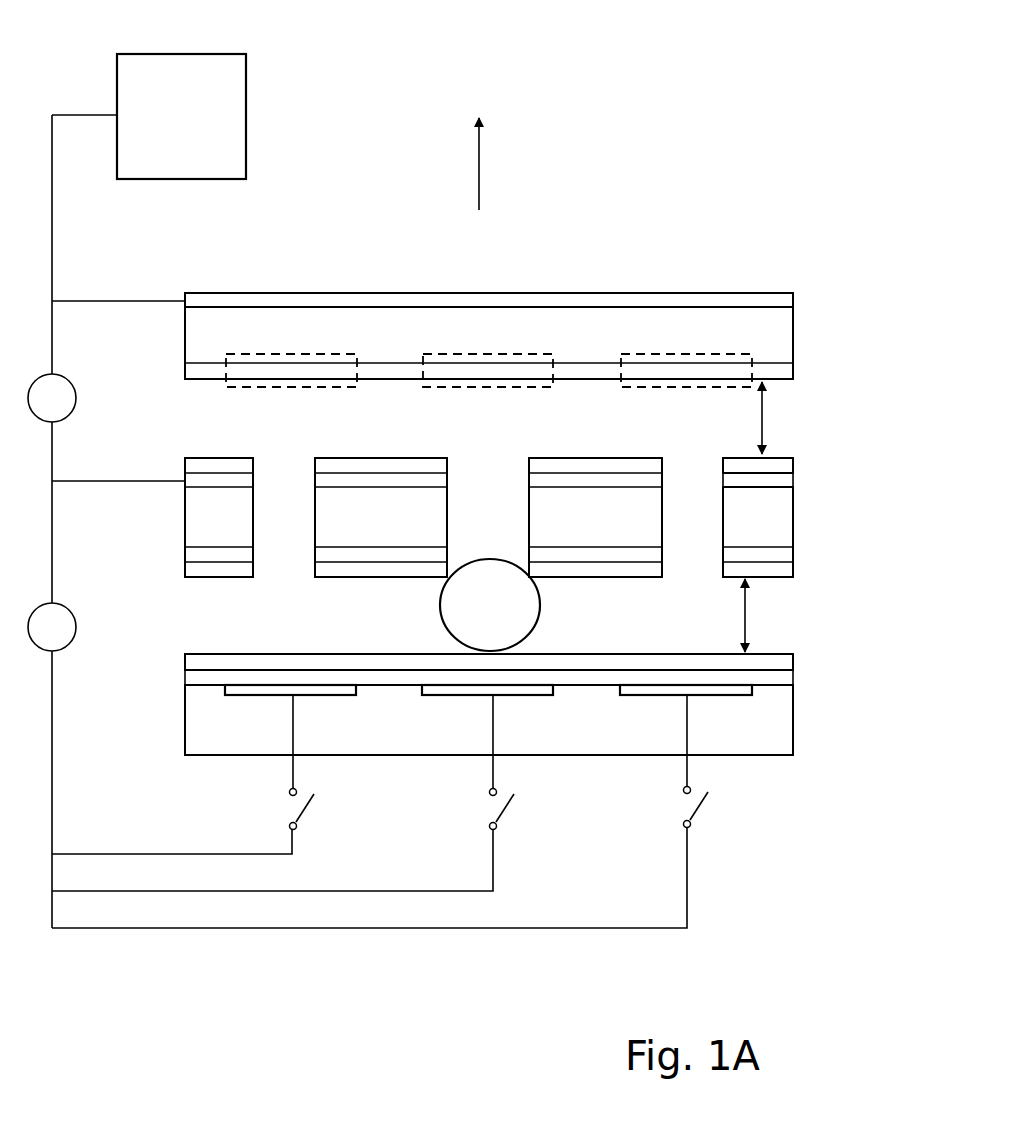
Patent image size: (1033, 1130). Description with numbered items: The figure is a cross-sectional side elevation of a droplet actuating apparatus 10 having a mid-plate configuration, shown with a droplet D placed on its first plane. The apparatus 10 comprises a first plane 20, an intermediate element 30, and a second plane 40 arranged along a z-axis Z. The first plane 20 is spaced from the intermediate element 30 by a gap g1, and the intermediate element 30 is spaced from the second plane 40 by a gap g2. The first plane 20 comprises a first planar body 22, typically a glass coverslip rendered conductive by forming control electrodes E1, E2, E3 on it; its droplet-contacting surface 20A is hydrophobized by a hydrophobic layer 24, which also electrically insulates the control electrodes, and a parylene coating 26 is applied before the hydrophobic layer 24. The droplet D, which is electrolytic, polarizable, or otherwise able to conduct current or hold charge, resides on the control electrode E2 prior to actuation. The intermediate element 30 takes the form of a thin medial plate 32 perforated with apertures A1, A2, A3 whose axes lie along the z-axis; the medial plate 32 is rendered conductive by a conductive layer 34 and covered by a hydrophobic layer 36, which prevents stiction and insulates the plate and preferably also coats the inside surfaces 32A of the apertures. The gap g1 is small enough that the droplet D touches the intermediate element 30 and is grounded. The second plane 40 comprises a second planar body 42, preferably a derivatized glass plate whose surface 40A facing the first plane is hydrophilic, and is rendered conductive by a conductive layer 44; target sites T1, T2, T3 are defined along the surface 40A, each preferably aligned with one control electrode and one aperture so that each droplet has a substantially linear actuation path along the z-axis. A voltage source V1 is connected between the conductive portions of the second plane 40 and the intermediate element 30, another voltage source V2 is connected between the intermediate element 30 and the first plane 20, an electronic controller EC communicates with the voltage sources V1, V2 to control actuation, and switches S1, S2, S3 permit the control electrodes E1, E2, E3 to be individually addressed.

The droplet actuating apparatus 10 is at (855, 163).
The first plane 20 is at (489, 710).
The first planar body 22 is at (793, 710).
The hydrophobic layer 24 is at (793, 656).
The parylene coating 26 is at (793, 672).
The droplet-contacting surface 20A is at (663, 650).
The intermediate element 30 is at (486, 514).
The medial plate 32 is at (793, 521).
The conductive layer 34 is at (793, 476).
The hydrophobic layer 36 is at (793, 459).
The inside surfaces of apertures 32A is at (253, 528).
The second plane 40 is at (487, 323).
The second planar body 42 is at (793, 330).
The conductive layer 44 is at (793, 296).
The surface 40A is at (588, 380).
The electronic controller EC is at (181, 116).
The z-axis Z is at (478, 162).
The droplet D is at (440, 612).
The voltage source V1 is at (52, 398).
The voltage source V2 is at (52, 627).
The target site T1 is at (249, 354).
The target site T2 is at (498, 354).
The target site T3 is at (652, 354).
The aperture A1 is at (288, 476).
The aperture A2 is at (484, 476).
The aperture A3 is at (692, 476).
The gap g1 is at (745, 616).
The gap g2 is at (762, 422).
The control electrode E1 is at (256, 696).
The control electrode E2 is at (447, 696).
The control electrode E3 is at (643, 696).
The switch S1 is at (310, 806).
The switch S2 is at (510, 806).
The switch S3 is at (704, 804).